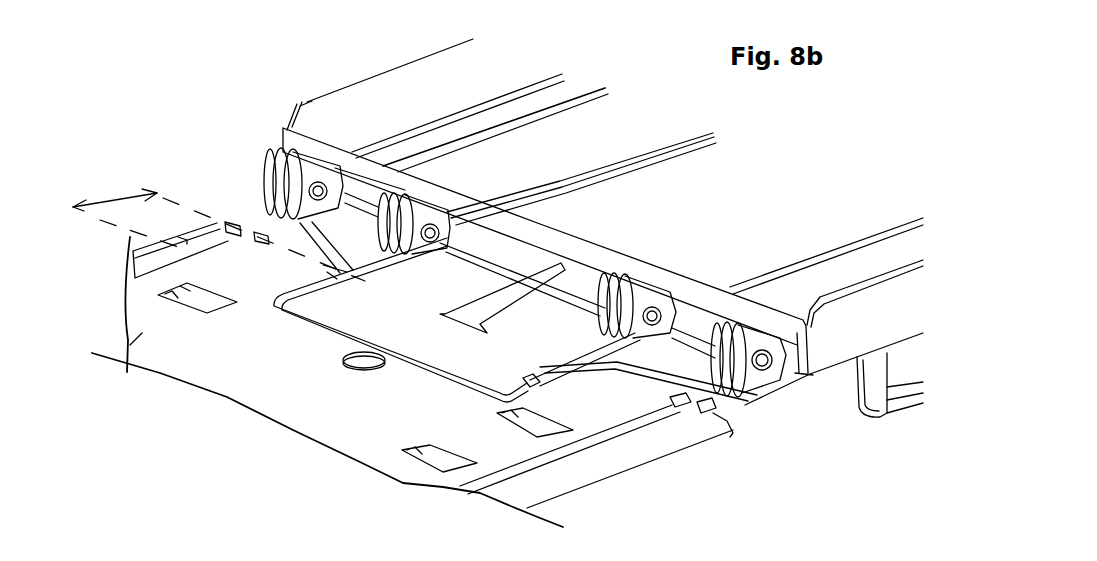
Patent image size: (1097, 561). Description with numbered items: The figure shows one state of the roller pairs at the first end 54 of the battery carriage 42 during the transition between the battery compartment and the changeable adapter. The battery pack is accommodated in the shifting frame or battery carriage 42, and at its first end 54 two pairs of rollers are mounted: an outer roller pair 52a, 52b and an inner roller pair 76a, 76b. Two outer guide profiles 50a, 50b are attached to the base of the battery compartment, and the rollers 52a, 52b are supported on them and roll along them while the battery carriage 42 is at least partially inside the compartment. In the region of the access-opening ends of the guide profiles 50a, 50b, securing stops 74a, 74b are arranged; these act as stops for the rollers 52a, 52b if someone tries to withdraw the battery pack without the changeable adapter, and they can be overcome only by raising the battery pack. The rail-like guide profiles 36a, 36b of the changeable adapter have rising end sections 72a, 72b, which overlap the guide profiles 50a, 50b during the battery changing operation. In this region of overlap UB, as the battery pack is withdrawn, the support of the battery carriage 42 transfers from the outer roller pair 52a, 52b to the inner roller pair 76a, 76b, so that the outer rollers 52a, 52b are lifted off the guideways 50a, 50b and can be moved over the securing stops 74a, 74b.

The battery carriage 42 is at (553, 260).
The first end 54 is at (252, 138).
The roller 52a is at (720, 385).
The roller 52b is at (282, 178).
The inner roller 76a is at (620, 297).
The inner roller 76b is at (412, 197).
The guide profile 36a is at (603, 352).
The guide profile 36b is at (397, 260).
The rising end section 72a is at (535, 378).
The rising end section 72b is at (332, 293).
The outer guide profile 50a is at (620, 427).
The outer guide profile 50b is at (208, 252).
The securing stop 74a is at (709, 410).
The securing stop 74b is at (232, 222).
The region of overlap UB is at (218, 222).